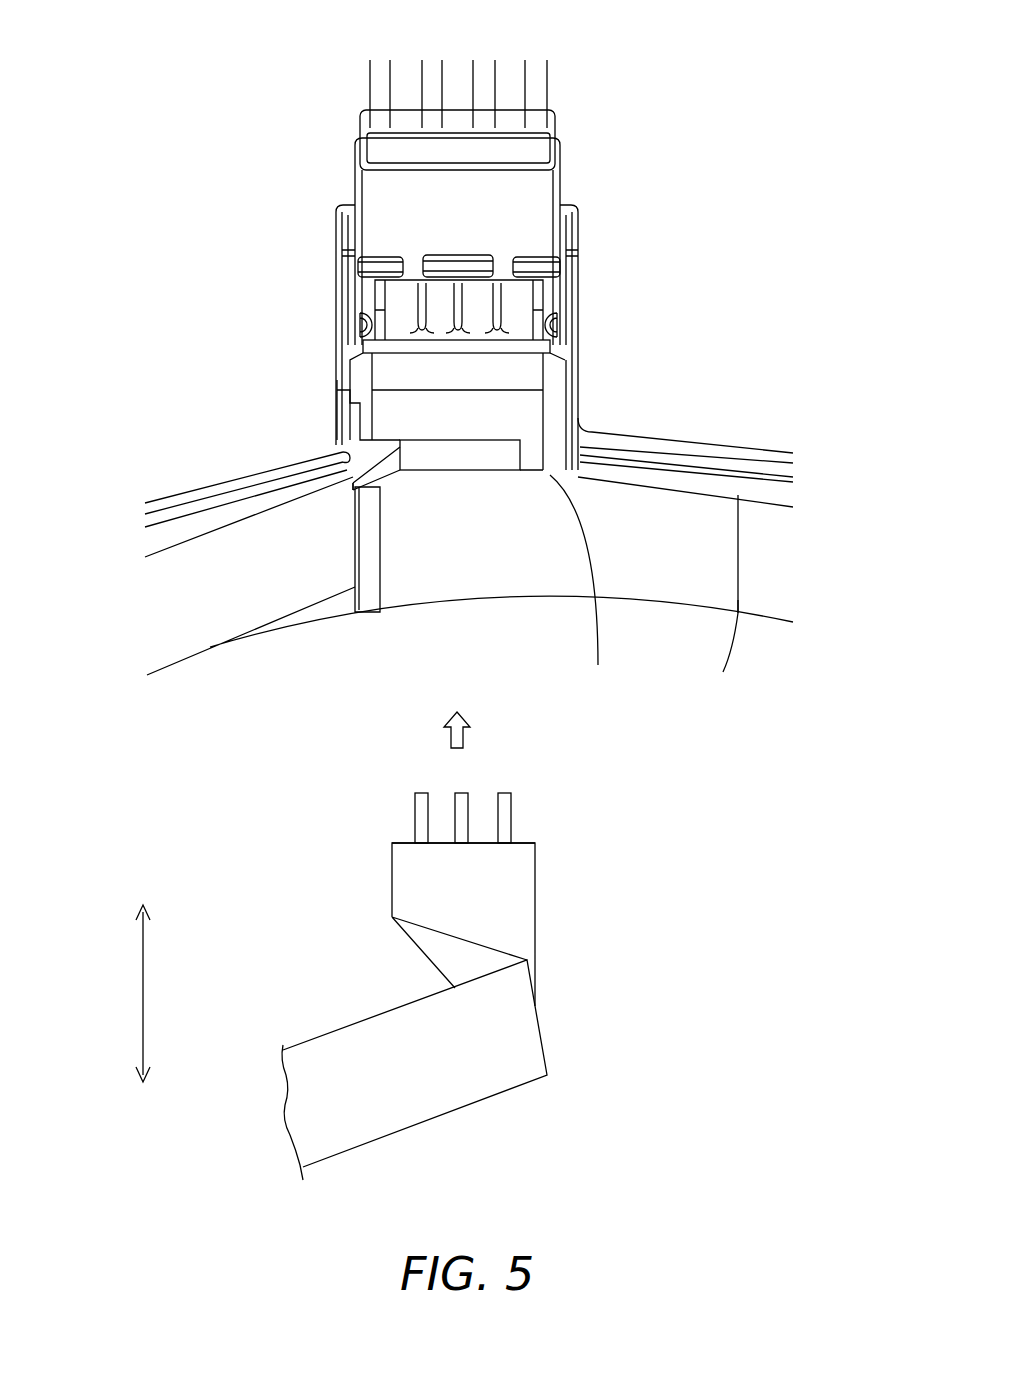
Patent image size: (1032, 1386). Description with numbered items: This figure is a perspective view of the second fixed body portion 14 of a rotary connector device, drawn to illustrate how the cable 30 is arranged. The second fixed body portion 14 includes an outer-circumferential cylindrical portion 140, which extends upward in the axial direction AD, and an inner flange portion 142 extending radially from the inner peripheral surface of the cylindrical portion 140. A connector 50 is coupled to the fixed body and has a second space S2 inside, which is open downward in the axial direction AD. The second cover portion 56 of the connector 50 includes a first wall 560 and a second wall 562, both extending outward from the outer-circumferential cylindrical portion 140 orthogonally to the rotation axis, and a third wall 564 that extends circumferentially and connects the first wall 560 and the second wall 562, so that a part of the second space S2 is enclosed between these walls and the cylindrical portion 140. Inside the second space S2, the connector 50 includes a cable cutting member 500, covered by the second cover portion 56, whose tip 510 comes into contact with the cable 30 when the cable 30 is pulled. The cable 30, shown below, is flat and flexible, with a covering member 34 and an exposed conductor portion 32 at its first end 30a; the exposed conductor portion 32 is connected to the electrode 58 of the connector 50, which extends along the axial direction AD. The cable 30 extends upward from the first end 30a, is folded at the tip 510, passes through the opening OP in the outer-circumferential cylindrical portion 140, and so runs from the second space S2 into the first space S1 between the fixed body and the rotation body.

The second fixed body portion 14 is at (820, 270).
The cable 30 is at (473, 967).
The first end 30a is at (392, 825).
The exposed conductor portion 32 is at (500, 795).
The covering member 34 is at (520, 903).
The connector 50 is at (405, 275).
The second cover portion 56 is at (210, 280).
The electrode 58 is at (497, 318).
The outer-circumferential cylindrical portion 140 is at (236, 600).
The inner flange portion 142 is at (705, 627).
The cable cutting member 500 is at (431, 440).
The tip 510 is at (584, 583).
The first wall 560 is at (348, 423).
The second wall 562 is at (592, 418).
The third wall 564 is at (517, 405).
The first space S1 is at (403, 656).
The second space S2 is at (442, 478).
The opening OP is at (337, 547).
The axial direction AD is at (145, 1003).